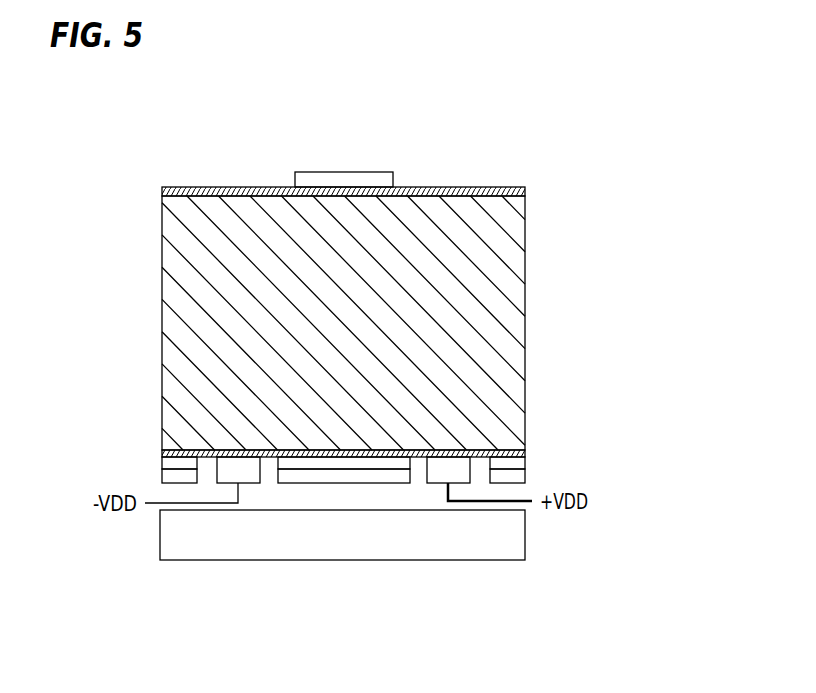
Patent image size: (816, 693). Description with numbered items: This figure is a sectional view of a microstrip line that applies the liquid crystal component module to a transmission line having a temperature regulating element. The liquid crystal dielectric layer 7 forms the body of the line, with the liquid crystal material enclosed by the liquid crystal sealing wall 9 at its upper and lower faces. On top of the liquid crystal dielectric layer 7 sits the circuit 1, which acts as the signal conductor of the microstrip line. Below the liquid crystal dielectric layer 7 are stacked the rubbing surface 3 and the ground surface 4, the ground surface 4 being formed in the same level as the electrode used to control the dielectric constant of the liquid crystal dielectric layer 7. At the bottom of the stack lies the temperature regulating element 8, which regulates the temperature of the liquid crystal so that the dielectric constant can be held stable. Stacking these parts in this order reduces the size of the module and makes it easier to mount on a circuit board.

The circuit 1 is at (345, 172).
The rubbing surface 3 is at (527, 461).
The ground surface 4 is at (526, 478).
The liquid crystal dielectric layer 7 is at (525, 307).
The temperature regulating element 8 is at (413, 560).
The liquid crystal sealing wall 9 is at (526, 187).